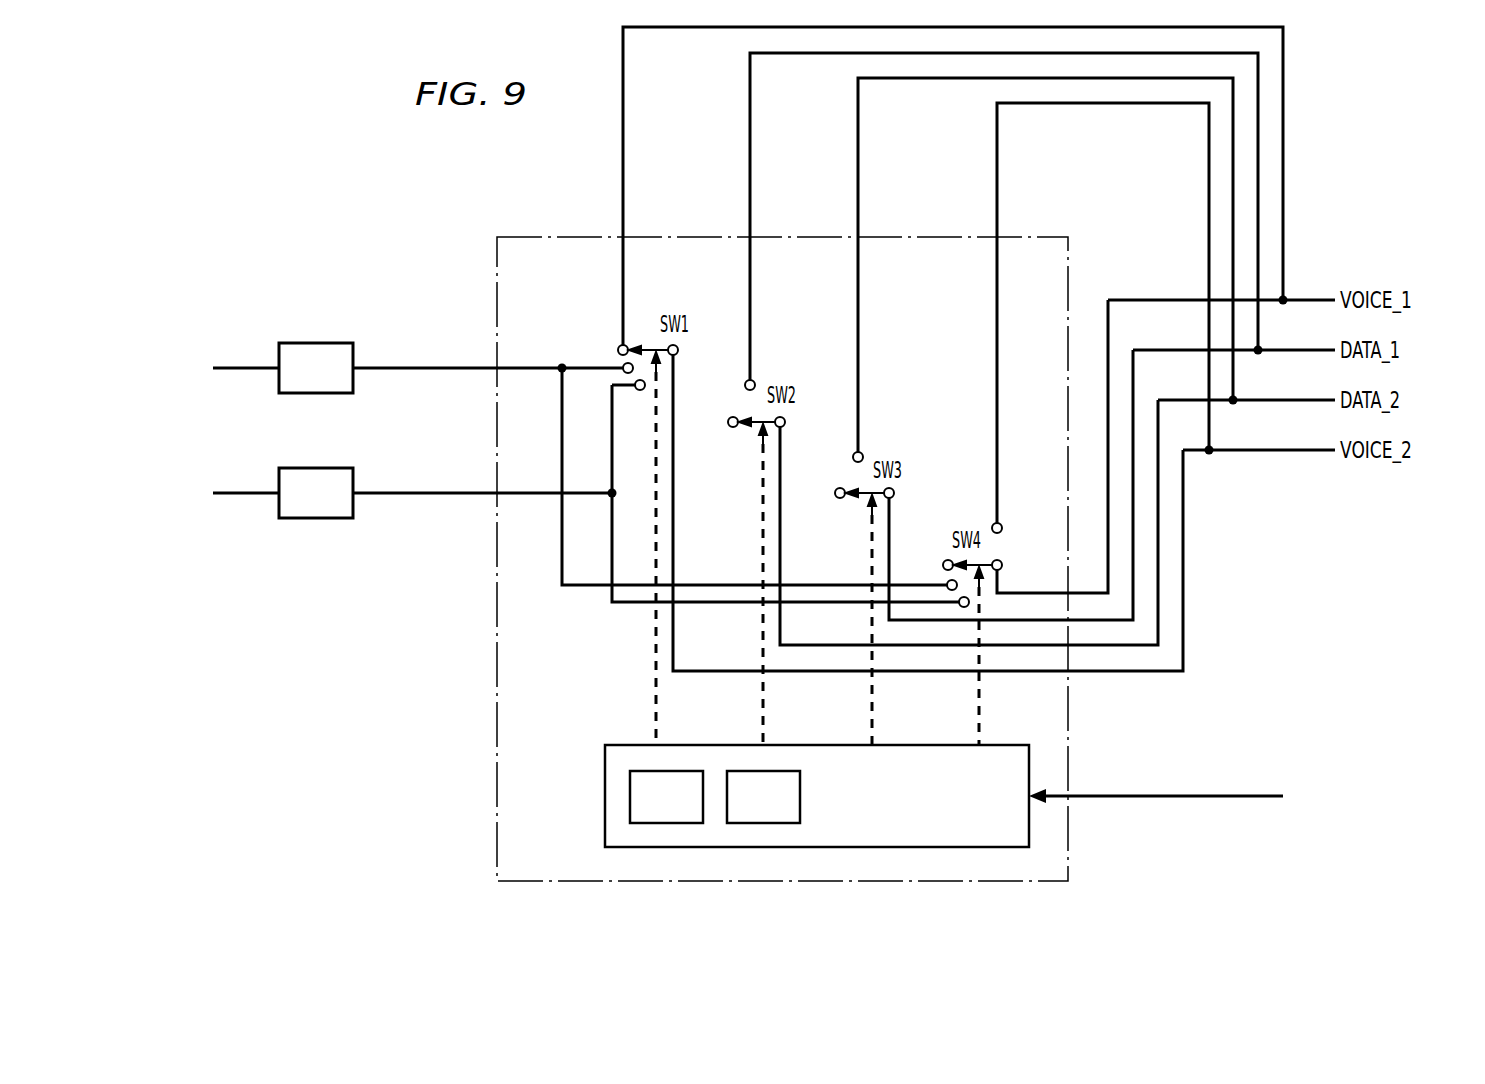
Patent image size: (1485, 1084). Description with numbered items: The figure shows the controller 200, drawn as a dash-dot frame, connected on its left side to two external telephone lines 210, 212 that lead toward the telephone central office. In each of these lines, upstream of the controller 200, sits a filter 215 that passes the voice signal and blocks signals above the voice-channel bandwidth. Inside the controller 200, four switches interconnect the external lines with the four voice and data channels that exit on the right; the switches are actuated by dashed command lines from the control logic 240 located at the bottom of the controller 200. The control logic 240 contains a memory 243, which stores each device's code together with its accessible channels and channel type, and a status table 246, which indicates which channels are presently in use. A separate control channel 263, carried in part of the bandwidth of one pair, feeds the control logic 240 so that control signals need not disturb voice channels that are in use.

The controller 200 is at (495, 297).
The external telephone line 210 is at (248, 367).
The external telephone line 212 is at (248, 497).
The filter 215 is at (313, 342).
The control logic 240 is at (817, 768).
The memory 243 is at (681, 810).
The status table 246 is at (778, 810).
The control channel 263 is at (1168, 793).